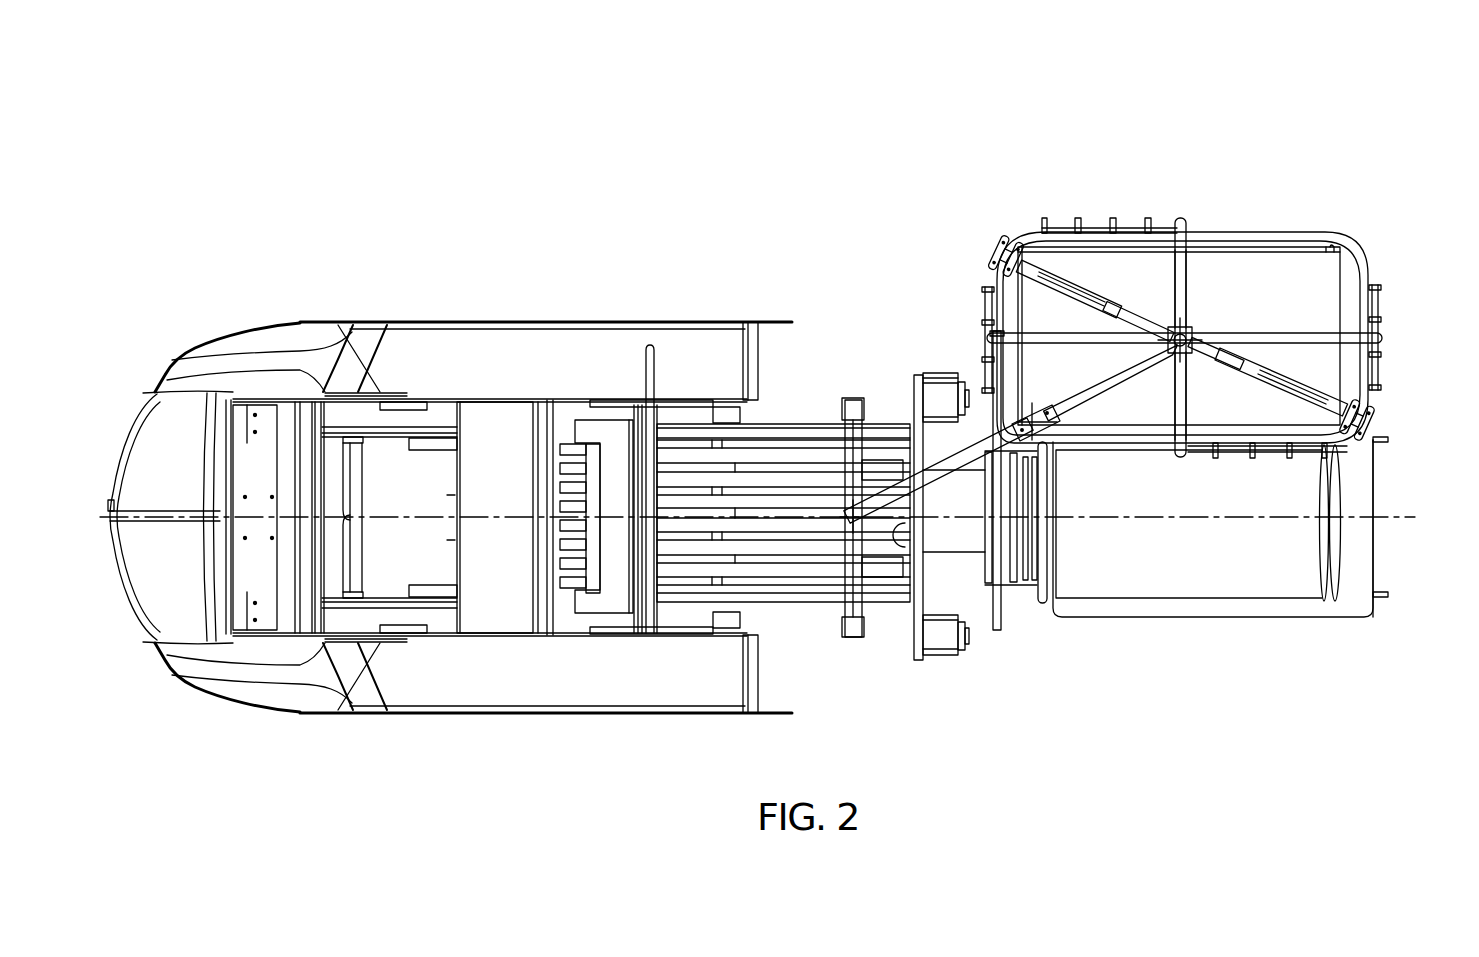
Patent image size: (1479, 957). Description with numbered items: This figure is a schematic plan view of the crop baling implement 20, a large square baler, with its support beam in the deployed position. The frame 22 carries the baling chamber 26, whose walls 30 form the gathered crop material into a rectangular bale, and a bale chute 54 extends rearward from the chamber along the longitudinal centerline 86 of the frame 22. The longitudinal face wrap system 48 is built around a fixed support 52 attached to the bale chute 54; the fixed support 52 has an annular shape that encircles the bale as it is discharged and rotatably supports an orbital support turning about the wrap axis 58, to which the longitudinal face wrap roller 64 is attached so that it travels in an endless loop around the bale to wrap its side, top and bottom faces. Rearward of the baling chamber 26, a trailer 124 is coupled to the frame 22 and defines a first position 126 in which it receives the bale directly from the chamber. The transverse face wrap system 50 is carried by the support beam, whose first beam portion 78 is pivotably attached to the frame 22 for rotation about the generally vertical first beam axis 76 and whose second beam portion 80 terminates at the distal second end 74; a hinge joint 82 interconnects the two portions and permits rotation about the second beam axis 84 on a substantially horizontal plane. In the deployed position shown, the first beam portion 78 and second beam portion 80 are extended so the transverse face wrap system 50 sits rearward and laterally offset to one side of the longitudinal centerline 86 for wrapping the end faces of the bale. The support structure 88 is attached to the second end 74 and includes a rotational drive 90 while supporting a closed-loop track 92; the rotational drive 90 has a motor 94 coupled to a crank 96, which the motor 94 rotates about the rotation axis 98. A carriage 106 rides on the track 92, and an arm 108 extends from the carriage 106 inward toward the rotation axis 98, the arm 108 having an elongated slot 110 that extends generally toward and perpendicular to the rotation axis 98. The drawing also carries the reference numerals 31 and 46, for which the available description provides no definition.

The crop baling implement 20 is at (555, 155).
The frame 22 is at (588, 422).
The baling chamber 26 is at (780, 472).
The walls 30 is at (811, 468).
The panel 31 is at (1068, 320).
The drive assembly 46 is at (885, 160).
The longitudinal face wrap system 48 is at (974, 637).
The transverse face wrap system 50 is at (1184, 176).
The fixed support 52 is at (919, 657).
The bale chute 54 is at (962, 557).
The wrap axis 58 is at (1189, 524).
The longitudinal face wrap roller 64 is at (972, 381).
The second end 74 is at (1172, 363).
The first beam axis 76 is at (828, 537).
The first beam portion 78 is at (940, 472).
The second beam portion 80 is at (1083, 397).
The hinge joint 82 is at (1063, 413).
The second beam axis 84 is at (1027, 413).
The longitudinal centerline 86 is at (1242, 522).
The support structure 88 is at (1173, 272).
The rotational drive 90 is at (1192, 330).
The track 92 is at (1277, 232).
The motor 94 is at (1167, 320).
The crank 96 is at (1235, 363).
The rotation axis 98 is at (1193, 348).
The carriage 106 is at (996, 250).
The arm 108 is at (1310, 387).
The elongated slot 110 is at (1270, 380).
The trailer 124 is at (1378, 556).
The first position 126 is at (1163, 580).